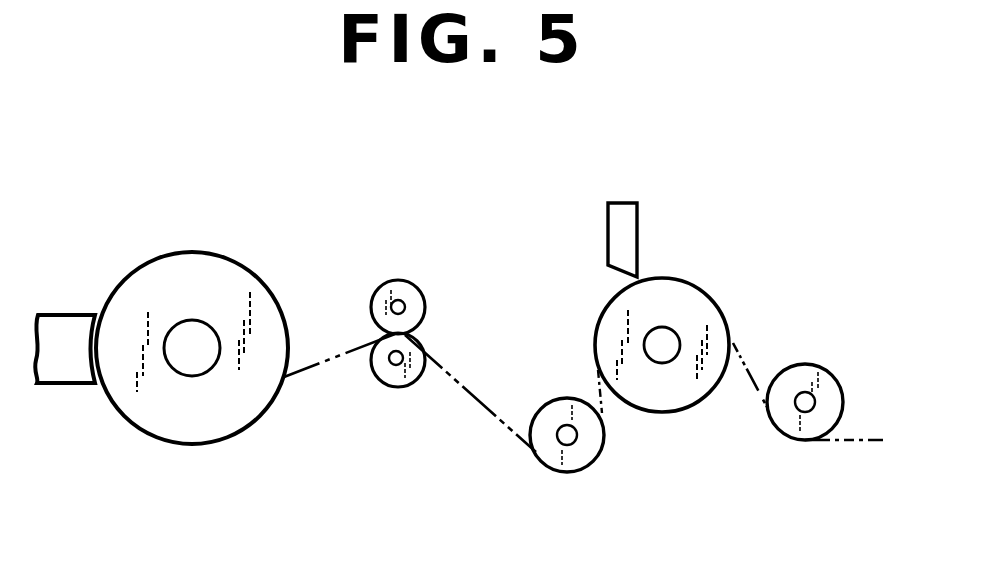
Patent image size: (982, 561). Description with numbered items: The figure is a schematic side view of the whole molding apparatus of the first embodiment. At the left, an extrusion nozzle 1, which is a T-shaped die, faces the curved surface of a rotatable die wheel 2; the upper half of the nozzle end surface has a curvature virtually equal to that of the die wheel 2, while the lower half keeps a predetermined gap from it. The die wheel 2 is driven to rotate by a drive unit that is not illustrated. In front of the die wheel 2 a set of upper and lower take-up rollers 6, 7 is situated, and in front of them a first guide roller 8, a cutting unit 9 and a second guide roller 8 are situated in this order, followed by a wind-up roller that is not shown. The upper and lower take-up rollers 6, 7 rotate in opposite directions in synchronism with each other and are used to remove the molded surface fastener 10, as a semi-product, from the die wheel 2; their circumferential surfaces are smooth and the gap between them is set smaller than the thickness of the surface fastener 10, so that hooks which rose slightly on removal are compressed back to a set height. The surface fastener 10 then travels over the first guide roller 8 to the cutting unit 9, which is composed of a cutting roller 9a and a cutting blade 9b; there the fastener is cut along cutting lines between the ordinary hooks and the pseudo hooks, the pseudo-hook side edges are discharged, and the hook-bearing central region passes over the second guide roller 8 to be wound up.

The extrusion nozzle 1 is at (63, 390).
The die wheel 2 is at (217, 250).
The upper take-up roller 6 is at (424, 288).
The lower take-up roller 7 is at (397, 388).
The guide roller 8 is at (572, 472).
The cutting unit 9 is at (680, 300).
The cutting roller 9a is at (660, 296).
The cutting blade 9b is at (627, 228).
The molded surface fastener 10 is at (473, 400).